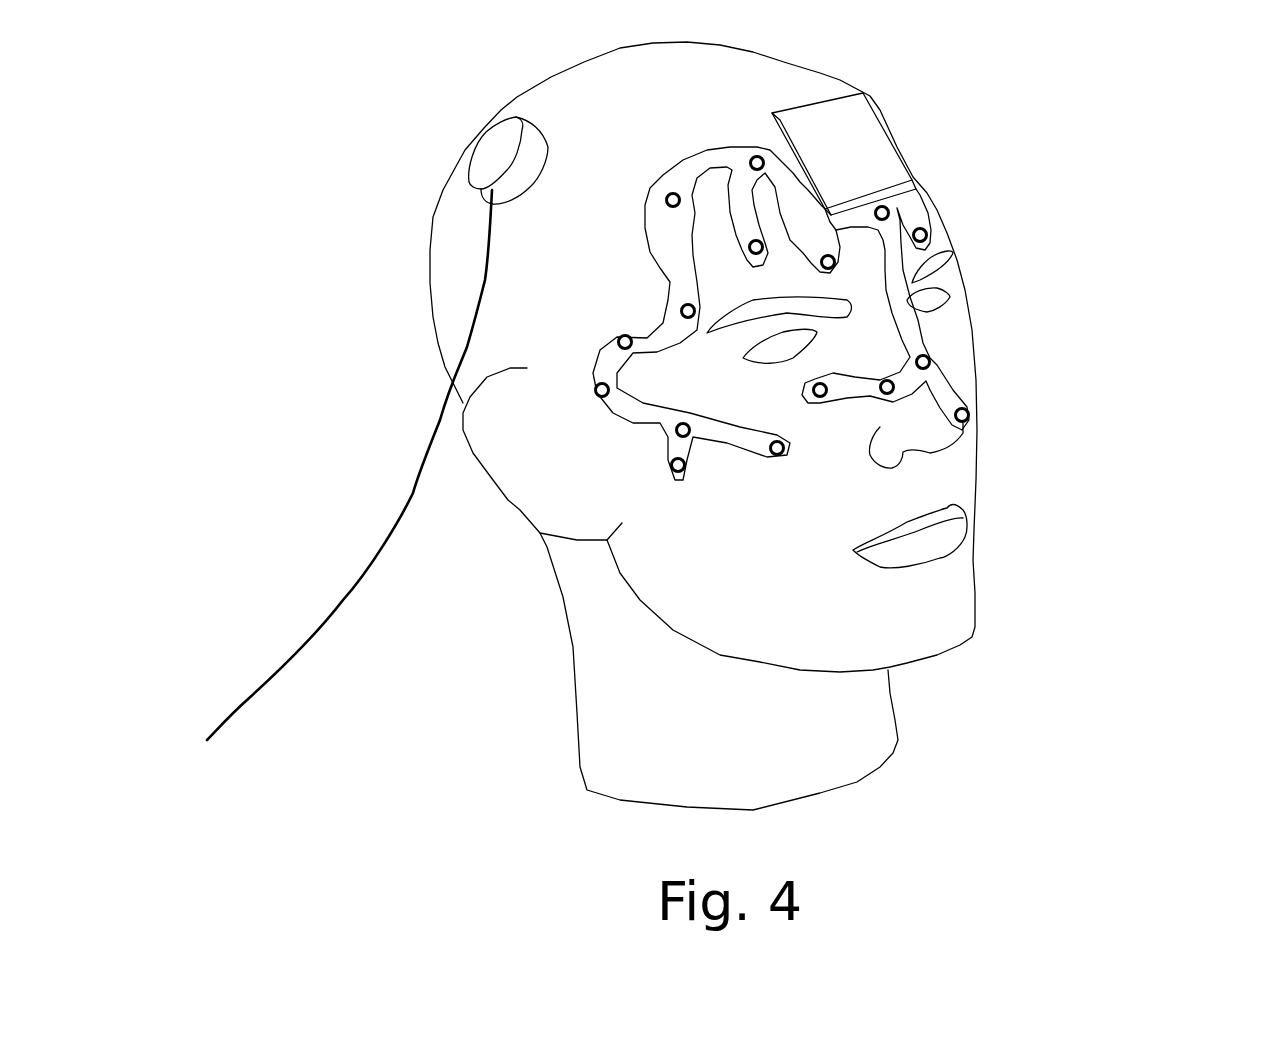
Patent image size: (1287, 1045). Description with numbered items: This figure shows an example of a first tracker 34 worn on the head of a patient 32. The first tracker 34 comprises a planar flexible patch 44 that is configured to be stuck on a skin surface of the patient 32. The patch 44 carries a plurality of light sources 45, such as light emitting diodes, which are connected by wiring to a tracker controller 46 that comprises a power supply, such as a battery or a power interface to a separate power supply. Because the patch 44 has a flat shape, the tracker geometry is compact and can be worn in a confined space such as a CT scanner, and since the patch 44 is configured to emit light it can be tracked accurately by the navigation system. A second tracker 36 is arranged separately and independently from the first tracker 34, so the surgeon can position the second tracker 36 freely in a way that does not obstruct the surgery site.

The patient 32 is at (1033, 670).
The first tracker 34 is at (928, 259).
The second tracker 36 is at (503, 147).
The planar flexible patch 44 is at (927, 207).
The light sources 45 is at (931, 364).
The tracker controller 46 is at (873, 143).